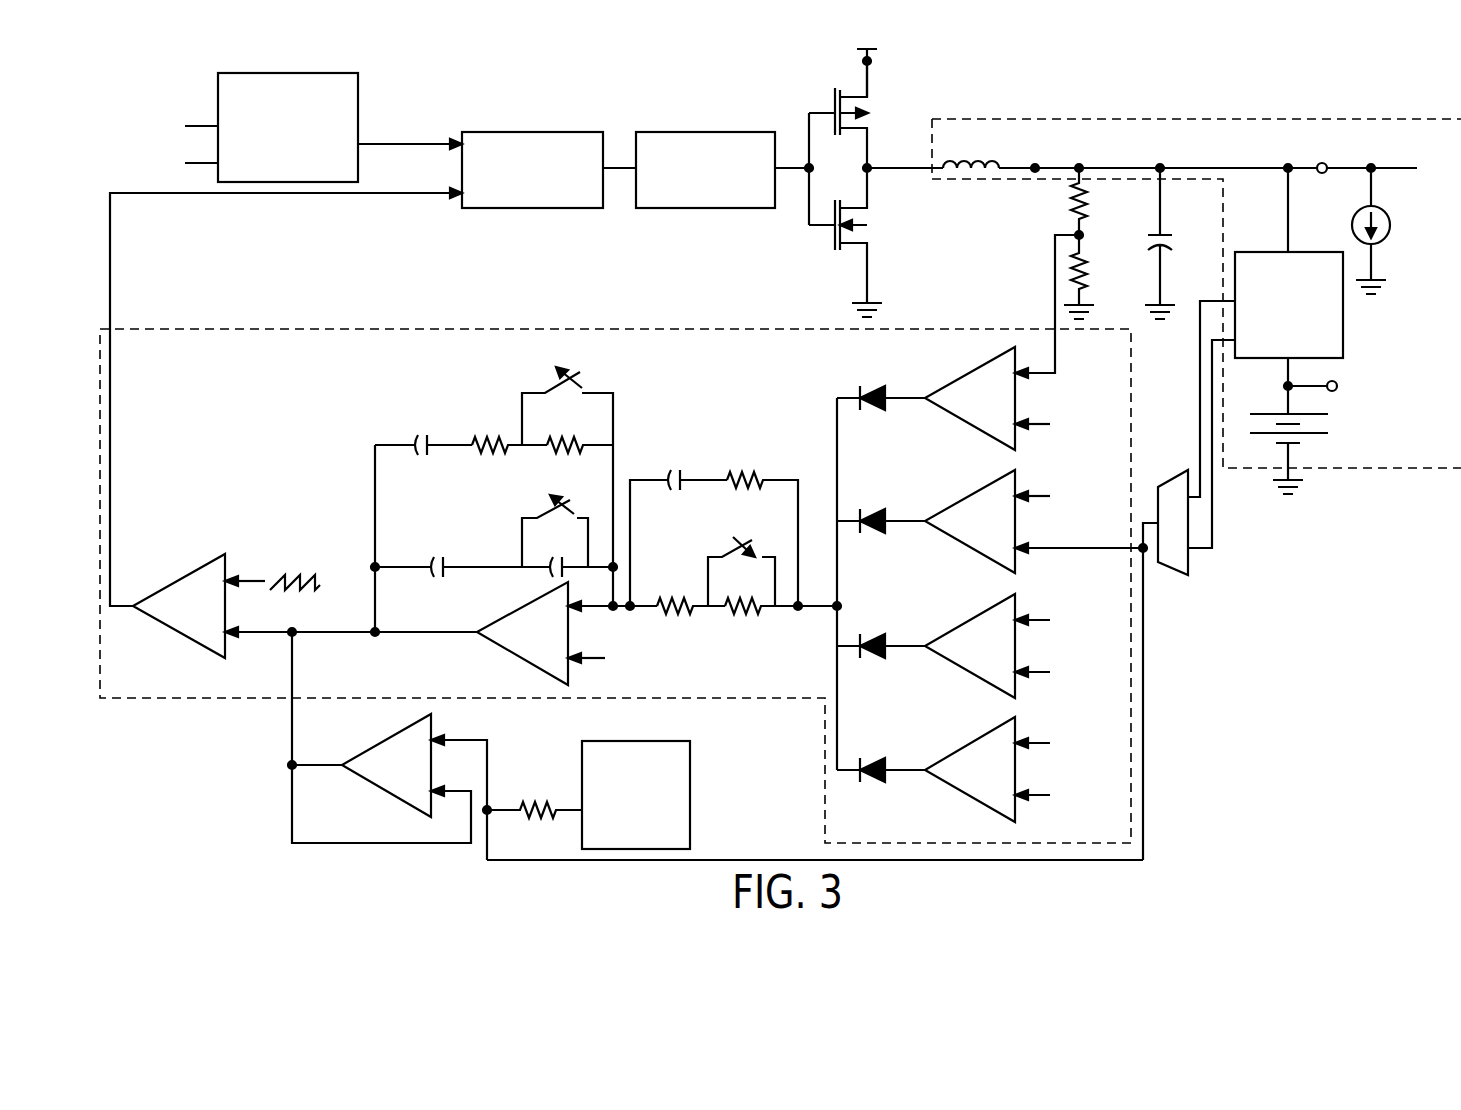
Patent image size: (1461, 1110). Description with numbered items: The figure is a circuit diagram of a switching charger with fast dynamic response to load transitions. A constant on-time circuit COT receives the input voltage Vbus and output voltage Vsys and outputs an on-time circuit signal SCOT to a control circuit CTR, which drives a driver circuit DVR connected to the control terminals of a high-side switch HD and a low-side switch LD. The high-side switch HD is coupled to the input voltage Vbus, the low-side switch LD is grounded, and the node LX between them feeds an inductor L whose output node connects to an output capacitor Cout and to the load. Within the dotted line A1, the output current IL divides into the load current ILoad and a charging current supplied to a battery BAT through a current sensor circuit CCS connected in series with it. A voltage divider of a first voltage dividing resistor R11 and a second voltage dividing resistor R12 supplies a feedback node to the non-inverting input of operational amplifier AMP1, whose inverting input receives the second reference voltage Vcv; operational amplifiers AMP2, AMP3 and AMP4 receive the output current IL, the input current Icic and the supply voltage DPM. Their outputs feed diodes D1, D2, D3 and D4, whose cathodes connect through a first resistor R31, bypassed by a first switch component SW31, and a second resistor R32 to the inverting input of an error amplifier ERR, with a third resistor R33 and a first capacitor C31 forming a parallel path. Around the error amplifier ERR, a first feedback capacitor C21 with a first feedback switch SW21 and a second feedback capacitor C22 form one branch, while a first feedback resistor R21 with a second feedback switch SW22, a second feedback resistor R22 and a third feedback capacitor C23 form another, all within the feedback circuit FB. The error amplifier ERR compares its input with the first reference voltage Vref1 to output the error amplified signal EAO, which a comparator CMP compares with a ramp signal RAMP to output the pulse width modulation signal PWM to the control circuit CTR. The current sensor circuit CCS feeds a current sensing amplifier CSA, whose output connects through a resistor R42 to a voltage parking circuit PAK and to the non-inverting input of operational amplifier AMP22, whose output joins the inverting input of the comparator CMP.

The constant on-time circuit COT is at (293, 72).
The control circuit CTR is at (532, 131).
The driver circuit DVR is at (705, 131).
The high-side switch HD is at (876, 112).
The low-side switch LD is at (873, 242).
The inductor L is at (971, 149).
The first voltage dividing resistor R11 is at (1106, 201).
The second voltage dividing resistor R12 is at (1102, 277).
The output capacitor Cout is at (1183, 243).
The load current ILoad is at (1405, 231).
The current sensor circuit CCS is at (1343, 326).
The battery BAT is at (1316, 426).
The current sensing amplifier CSA is at (1183, 562).
The dotted line A1 is at (1205, 118).
The feedback circuit FB is at (1131, 722).
The operational amplifier AMP1 is at (960, 410).
The operational amplifier AMP2 is at (960, 533).
The operational amplifier AMP3 is at (960, 658).
The operational amplifier AMP4 is at (960, 782).
The diode D1 is at (864, 384).
The diode D2 is at (864, 507).
The diode D3 is at (864, 632).
The diode D4 is at (864, 756).
The first feedback capacitor C21 is at (567, 551).
The second feedback capacitor C22 is at (448, 551).
The third feedback capacitor C23 is at (423, 429).
The first feedback resistor R21 is at (576, 428).
The second feedback resistor R22 is at (504, 428).
The first feedback switch SW21 is at (558, 517).
The second feedback switch SW22 is at (567, 393).
The first switch component SW31 is at (744, 557).
The first capacitor C31 is at (678, 522).
The first resistor R31 is at (777, 590).
The second resistor R32 is at (686, 590).
The third resistor R33 is at (758, 522).
The error amplifier ERR is at (520, 650).
The comparator CMP is at (170, 618).
The operational amplifier AMP22 is at (383, 778).
The resistor R42 is at (534, 795).
The voltage parking circuit PAK is at (746, 789).
The input voltage Vbus is at (508, 79).
The output voltage Vsys is at (768, 153).
The on-time circuit signal SCOT is at (410, 131).
The pulse width modulation signal PWM is at (286, 397).
The node LX is at (903, 155).
The output current IL is at (1052, 158).
The input current Icic is at (893, 52).
The second reference voltage Vcv is at (1080, 426).
The supply voltage DPM is at (1085, 772).
The first reference voltage Vref1 is at (642, 659).
The error amplified signal EAO is at (351, 619).
The ramp signal RAMP is at (295, 567).